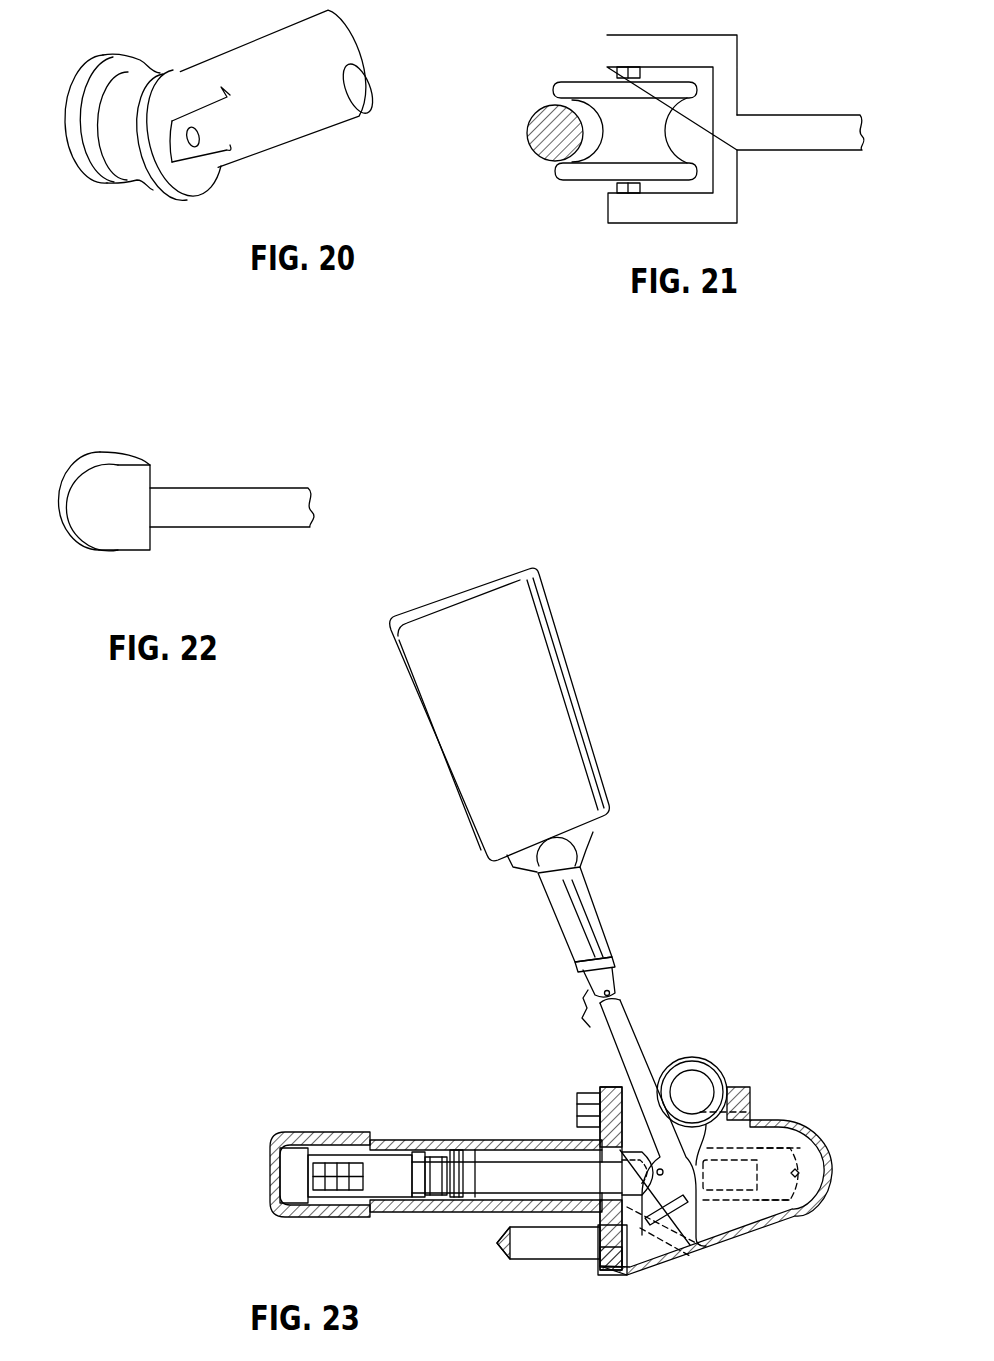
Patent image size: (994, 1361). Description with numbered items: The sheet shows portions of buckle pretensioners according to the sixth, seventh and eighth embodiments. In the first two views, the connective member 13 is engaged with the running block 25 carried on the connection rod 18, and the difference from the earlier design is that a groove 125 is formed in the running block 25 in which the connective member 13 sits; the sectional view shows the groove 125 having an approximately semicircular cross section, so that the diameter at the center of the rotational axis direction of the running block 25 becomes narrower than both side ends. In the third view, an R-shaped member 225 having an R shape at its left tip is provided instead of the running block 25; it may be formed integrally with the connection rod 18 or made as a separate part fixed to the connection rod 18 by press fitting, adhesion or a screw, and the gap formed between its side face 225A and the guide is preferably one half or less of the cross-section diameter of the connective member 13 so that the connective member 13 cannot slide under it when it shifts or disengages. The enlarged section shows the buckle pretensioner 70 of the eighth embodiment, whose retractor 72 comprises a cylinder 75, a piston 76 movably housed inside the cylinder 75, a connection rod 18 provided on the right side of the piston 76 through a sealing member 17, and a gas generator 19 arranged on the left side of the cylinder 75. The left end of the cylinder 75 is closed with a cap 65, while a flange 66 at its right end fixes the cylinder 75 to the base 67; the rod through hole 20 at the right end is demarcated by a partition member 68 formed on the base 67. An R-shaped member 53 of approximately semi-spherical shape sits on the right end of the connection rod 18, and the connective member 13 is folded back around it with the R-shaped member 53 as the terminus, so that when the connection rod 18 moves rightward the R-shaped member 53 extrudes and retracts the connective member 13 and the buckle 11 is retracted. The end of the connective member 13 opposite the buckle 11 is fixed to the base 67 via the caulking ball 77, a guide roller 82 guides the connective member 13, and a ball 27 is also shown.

In FIG. 23, the buckle 11 is at (565, 712).
In FIG. 21, the connective member 13 is at (543, 127).
In FIG. 23, the connective member 13 is at (602, 984).
In FIG. 23, the sealing member 17 is at (458, 1157).
In FIG. 20, the connection rod 18 is at (310, 113).
In FIG. 21, the connection rod 18 is at (827, 133).
In FIG. 22, the connection rod 18 is at (280, 497).
In FIG. 23, the connection rod 18 is at (493, 1183).
In FIG. 23, the gas generator 19 is at (320, 1193).
In FIG. 23, the rod through hole 20 is at (563, 1170).
In FIG. 20, the running block 25 is at (177, 180).
In FIG. 21, the running block 25 is at (676, 90).
In FIG. 23, the ball 27 is at (430, 1157).
In FIG. 23, the R-shaped member 53 is at (630, 1130).
In FIG. 23, the cap 65 is at (280, 1215).
In FIG. 23, the flange 66 is at (577, 1123).
In FIG. 23, the base 67 is at (664, 1272).
In FIG. 23, the partition member 68 is at (596, 1240).
In FIG. 23, the buckle pretensioner 70 is at (670, 621).
In FIG. 23, the retractor 72 is at (745, 940).
In FIG. 23, the cylinder 75 is at (384, 1137).
In FIG. 23, the piston 76 is at (440, 1182).
In FIG. 23, the caulking ball 77 is at (538, 1243).
In FIG. 23, the guide roller 82 is at (708, 1062).
In FIG. 20, the groove 125 is at (120, 120).
In FIG. 21, the groove 125 is at (667, 133).
In FIG. 22, the R-shaped member 225 is at (67, 528).
In FIG. 22, the side face 225A is at (131, 533).